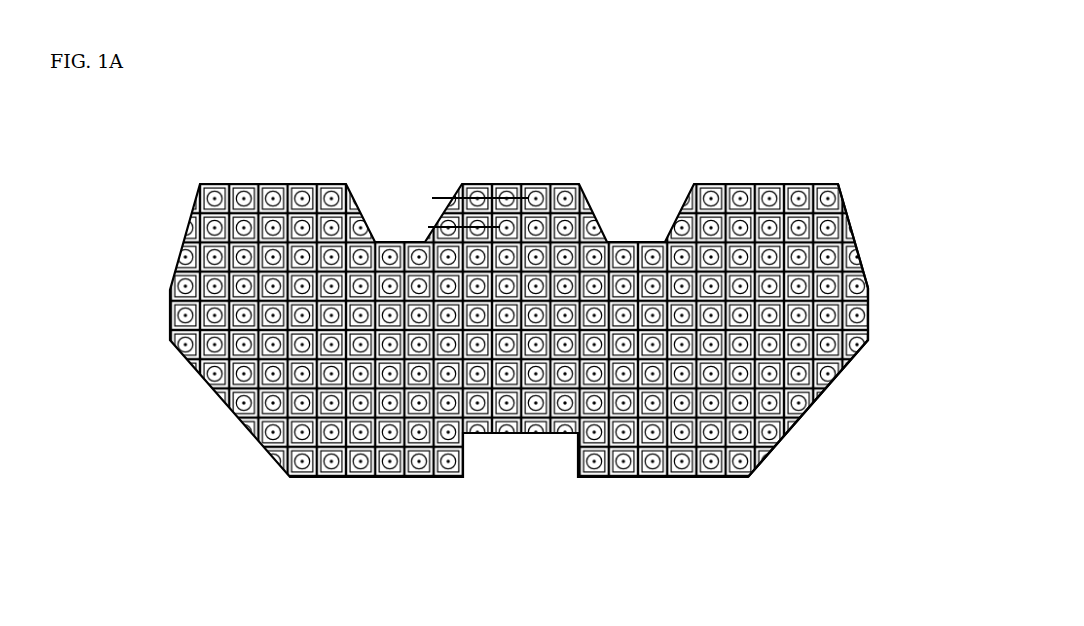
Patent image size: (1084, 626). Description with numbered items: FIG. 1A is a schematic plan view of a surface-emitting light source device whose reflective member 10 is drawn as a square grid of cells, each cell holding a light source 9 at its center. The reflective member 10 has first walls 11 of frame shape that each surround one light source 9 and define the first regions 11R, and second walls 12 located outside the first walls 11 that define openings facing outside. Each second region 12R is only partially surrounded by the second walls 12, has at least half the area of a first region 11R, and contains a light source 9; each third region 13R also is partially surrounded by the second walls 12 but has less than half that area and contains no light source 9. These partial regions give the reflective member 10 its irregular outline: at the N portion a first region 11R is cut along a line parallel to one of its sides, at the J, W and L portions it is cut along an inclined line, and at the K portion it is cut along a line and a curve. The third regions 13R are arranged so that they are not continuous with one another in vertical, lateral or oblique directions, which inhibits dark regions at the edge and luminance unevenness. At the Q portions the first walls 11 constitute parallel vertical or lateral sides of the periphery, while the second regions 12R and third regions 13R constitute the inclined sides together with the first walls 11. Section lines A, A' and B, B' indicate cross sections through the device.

The light source 9 is at (867, 282).
The reflective member 10 is at (862, 182).
The first wall 11 is at (297, 213).
The second wall 12 is at (200, 197).
The first region 11R is at (790, 195).
The second region 12R is at (205, 200).
The third region 13R is at (350, 213).
The Q portion Q is at (327, 157).
The W portion W is at (187, 215).
The section line A is at (464, 260).
The section line A' is at (503, 260).
The section line B is at (480, 165).
The section line B' is at (525, 164).
The L portion L is at (597, 210).
The J portion J is at (860, 400).
The K portion K is at (467, 437).
The N portion N is at (512, 440).